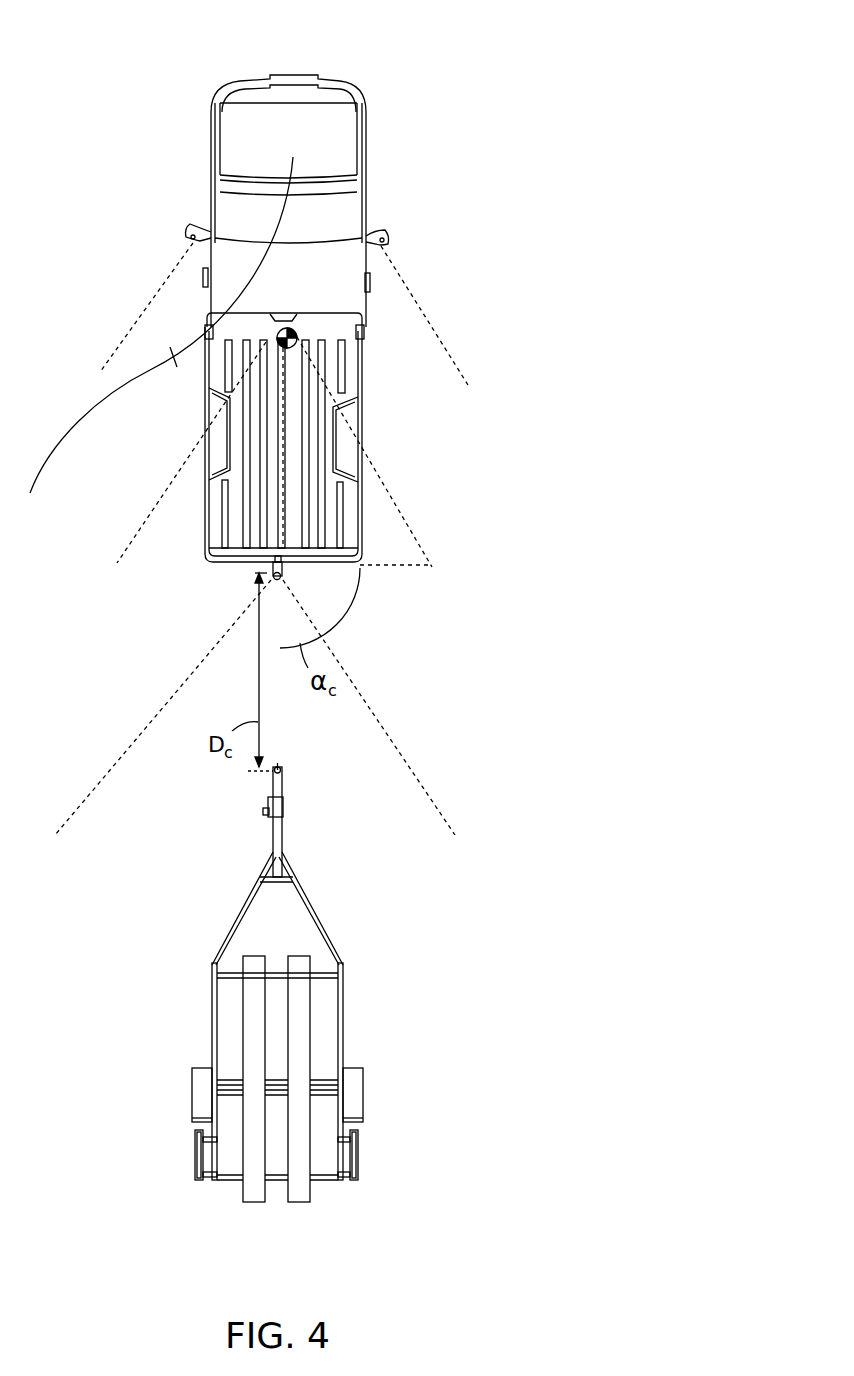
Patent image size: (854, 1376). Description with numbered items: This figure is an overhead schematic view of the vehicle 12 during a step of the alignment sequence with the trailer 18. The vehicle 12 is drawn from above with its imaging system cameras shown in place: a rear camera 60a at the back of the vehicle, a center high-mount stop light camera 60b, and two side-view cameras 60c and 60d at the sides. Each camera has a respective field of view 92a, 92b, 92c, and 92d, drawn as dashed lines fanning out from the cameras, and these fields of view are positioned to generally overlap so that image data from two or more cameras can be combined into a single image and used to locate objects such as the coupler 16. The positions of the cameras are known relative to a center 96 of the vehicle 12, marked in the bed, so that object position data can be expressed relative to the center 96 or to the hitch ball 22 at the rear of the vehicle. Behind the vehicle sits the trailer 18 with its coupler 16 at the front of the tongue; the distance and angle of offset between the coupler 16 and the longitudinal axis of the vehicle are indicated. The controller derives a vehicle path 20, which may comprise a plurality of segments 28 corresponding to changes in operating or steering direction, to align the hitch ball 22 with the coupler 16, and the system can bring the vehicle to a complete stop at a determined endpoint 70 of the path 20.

The vehicle 12 is at (373, 40).
The coupler 16 is at (282, 771).
The trailer 18 is at (222, 930).
The vehicle path 20 is at (290, 463).
The hitch ball 22 is at (273, 567).
The segments 28 is at (247, 294).
The rear camera 60a is at (280, 559).
The center high-mount stop light (CHMSL) camera 60b is at (285, 323).
The side-view camera 60c is at (383, 245).
The side-view camera 60d is at (183, 250).
The endpoint 70 is at (277, 541).
The field of view 92a is at (172, 695).
The field of view 92b is at (128, 548).
The field of view 92c is at (450, 340).
The field of view 92d is at (112, 350).
The center 96 is at (300, 340).